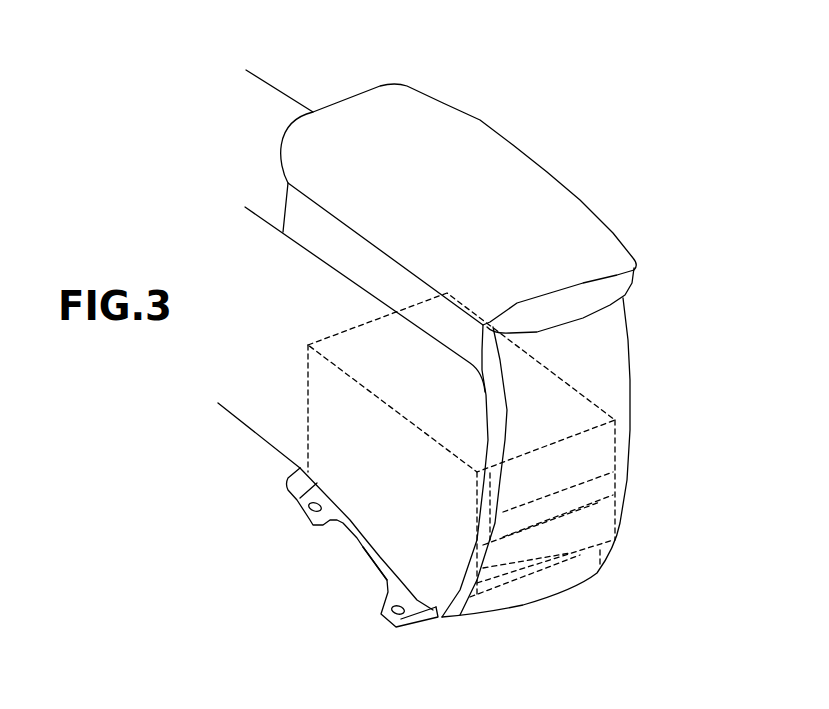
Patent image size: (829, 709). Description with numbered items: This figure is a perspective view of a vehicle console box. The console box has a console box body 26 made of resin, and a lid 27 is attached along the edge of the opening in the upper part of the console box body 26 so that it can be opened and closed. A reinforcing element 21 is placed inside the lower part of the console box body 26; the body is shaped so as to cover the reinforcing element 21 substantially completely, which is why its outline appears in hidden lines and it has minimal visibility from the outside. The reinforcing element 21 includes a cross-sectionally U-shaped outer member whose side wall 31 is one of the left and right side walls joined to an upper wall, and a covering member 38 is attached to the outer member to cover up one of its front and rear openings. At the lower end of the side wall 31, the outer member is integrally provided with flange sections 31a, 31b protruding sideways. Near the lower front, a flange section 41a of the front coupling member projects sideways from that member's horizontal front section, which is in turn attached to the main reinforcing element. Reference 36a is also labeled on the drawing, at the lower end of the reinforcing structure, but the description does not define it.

The reinforcing element 21 is at (625, 443).
The console box body 26 is at (590, 340).
The lid 27 is at (493, 172).
The side wall 31 is at (620, 217).
The flange section 31a is at (307, 498).
The flange section 31b is at (388, 595).
The mounting tab 36a is at (423, 625).
The covering member 38 is at (597, 523).
The flange section 41a is at (293, 481).